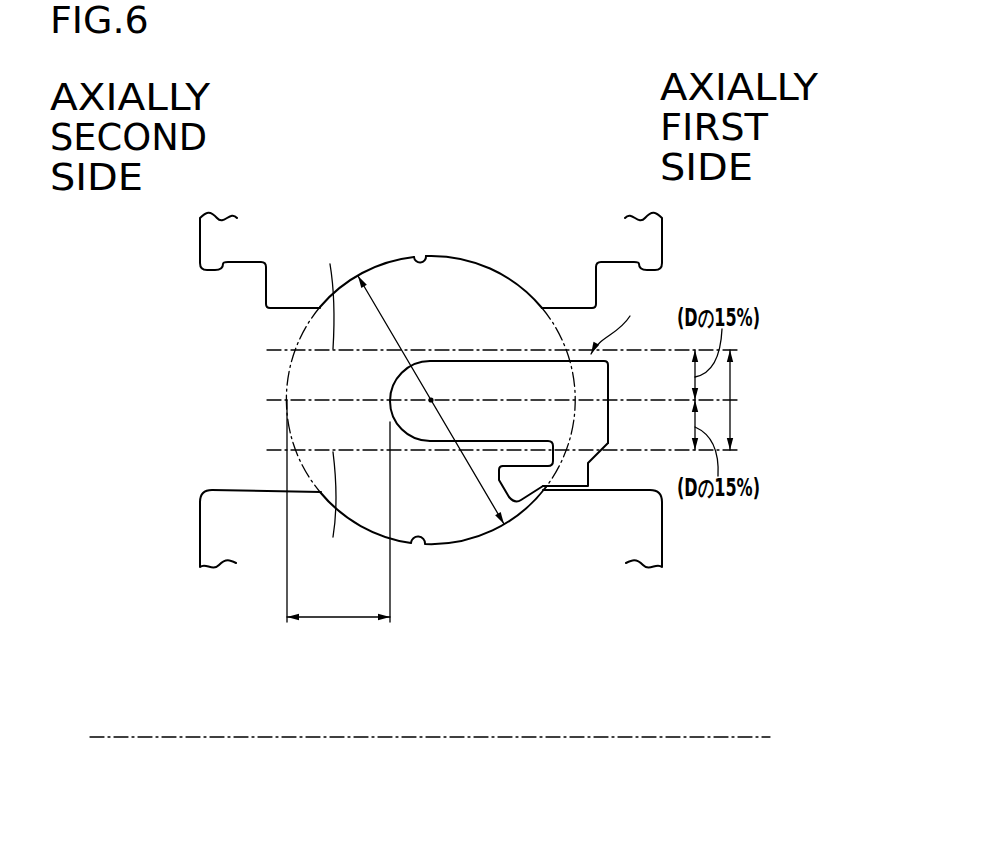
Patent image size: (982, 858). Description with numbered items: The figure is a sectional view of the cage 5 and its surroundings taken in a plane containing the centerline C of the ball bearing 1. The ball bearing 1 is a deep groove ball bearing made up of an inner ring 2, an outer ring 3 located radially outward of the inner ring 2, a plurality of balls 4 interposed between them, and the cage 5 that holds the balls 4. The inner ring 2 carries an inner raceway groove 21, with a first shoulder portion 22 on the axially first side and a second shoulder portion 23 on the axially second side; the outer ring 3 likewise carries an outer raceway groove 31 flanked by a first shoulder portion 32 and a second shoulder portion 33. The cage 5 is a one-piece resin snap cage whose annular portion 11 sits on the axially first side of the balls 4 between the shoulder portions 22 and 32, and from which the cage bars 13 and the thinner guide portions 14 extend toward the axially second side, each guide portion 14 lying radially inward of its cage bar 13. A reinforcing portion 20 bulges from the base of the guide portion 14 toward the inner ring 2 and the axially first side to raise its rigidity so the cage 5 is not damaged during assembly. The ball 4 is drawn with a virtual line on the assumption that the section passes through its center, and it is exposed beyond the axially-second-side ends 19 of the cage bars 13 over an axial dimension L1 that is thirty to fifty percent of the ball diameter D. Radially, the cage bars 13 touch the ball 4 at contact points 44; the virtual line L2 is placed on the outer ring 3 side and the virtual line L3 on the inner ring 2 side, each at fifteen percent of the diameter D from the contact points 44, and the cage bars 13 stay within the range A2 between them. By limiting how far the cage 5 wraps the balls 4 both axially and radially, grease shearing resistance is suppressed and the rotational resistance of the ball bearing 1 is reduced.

The ball bearing 1 is at (196, 531).
The inner ring 2 is at (662, 533).
The outer ring 3 is at (662, 240).
The ball 4 is at (287, 387).
The cage 5 is at (615, 321).
The annular portion 11 is at (605, 432).
The cage bar 13 is at (445, 388).
The guide portion 14 is at (513, 487).
The axially-second-side end 19 is at (388, 398).
The reinforcing portion 20 is at (578, 482).
The inner raceway groove 21 is at (420, 541).
The first shoulder portion 22 is at (647, 506).
The second shoulder portion 23 is at (240, 488).
The outer raceway groove 31 is at (420, 257).
The first shoulder portion 32 is at (568, 302).
The second shoulder portion 33 is at (295, 310).
The contact point 44 is at (431, 403).
The diameter of the ball D is at (382, 310).
The axial dimension L1 is at (338, 523).
The virtual line L2 is at (328, 293).
The virtual line L3 is at (325, 506).
The range A2 is at (743, 400).
The centerline C is at (126, 735).